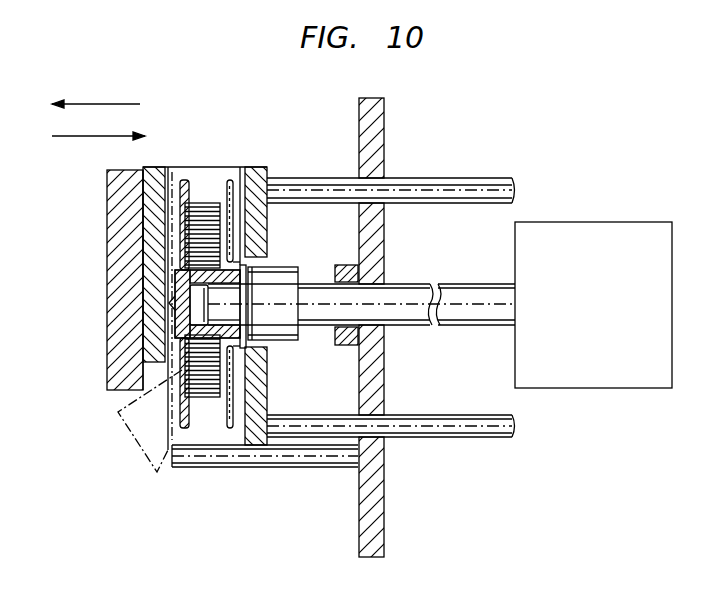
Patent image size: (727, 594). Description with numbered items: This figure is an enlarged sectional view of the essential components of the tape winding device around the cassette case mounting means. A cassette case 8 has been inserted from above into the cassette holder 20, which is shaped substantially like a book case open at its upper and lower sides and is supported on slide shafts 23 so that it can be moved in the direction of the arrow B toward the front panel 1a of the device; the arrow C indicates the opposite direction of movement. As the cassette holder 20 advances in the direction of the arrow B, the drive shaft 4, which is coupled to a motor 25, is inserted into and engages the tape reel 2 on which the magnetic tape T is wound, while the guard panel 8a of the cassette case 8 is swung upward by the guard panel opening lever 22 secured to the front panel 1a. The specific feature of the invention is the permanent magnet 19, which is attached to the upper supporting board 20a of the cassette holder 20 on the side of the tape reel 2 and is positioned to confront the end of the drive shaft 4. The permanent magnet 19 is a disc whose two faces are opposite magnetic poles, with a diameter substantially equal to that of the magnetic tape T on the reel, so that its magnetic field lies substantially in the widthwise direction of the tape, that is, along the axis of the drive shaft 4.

The front panel 1a is at (363, 527).
The tape reel 2 is at (230, 182).
The drive shaft 4 is at (315, 283).
The cassette case 8 is at (237, 437).
The guard panel 8a is at (146, 449).
The permanent magnet 19 is at (115, 290).
The cassette holder 20 is at (100, 364).
The upper supporting board 20a is at (150, 216).
The guard panel opening lever 22 is at (315, 463).
The slide shaft 23 is at (468, 192).
The motor 25 is at (610, 222).
The magnetic tape T is at (200, 205).
The direction arrow B is at (98, 128).
The direction C is at (96, 96).